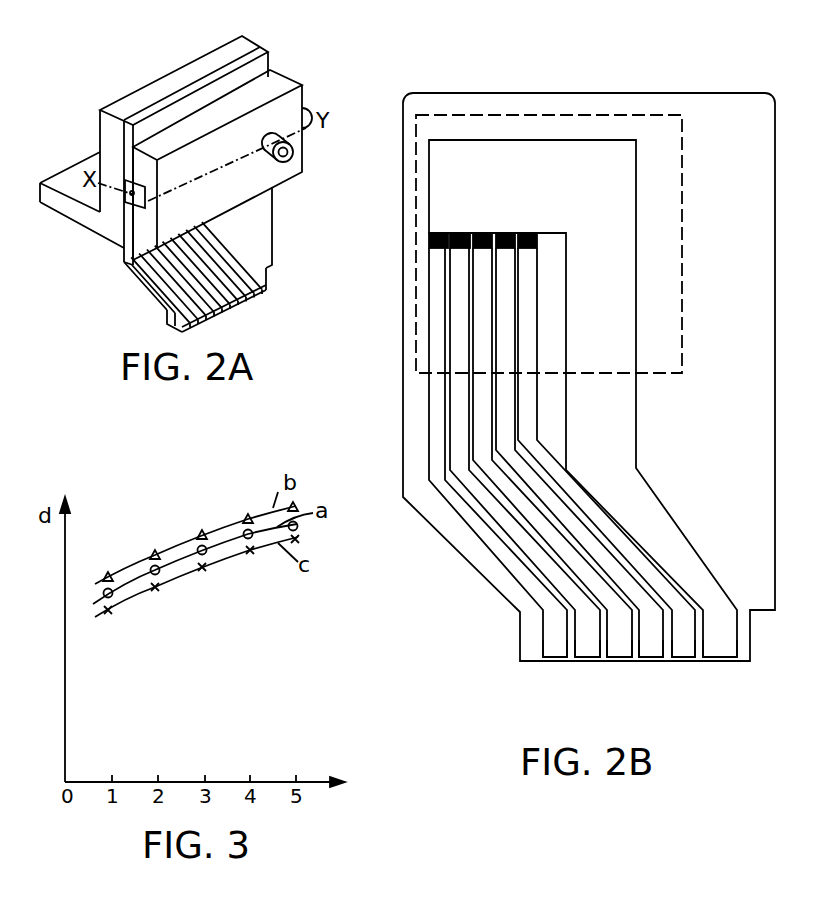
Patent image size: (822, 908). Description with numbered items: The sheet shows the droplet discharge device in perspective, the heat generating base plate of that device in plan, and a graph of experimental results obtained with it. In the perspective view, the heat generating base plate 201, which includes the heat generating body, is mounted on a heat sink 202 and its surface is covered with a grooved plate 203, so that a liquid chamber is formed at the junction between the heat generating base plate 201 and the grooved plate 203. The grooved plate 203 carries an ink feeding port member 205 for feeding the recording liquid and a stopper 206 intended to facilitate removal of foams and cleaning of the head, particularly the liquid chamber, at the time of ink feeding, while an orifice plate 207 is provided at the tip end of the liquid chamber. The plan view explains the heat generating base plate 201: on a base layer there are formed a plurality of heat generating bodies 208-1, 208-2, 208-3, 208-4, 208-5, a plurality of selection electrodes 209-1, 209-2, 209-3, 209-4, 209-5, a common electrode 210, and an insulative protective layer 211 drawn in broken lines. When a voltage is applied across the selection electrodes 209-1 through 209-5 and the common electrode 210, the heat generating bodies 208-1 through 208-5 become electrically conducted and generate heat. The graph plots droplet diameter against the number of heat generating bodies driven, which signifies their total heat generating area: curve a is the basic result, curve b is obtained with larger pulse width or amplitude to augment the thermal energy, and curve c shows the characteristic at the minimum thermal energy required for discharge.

In FIG. 2A, the heat generating base plate 201 is at (262, 48).
In FIG. 2B, the heat generating base plate 201 is at (736, 106).
In FIG. 2A, the heat sink 202 is at (200, 62).
In FIG. 2A, the grooved plate 203 is at (283, 78).
In FIG. 2A, the ink feeding port member 205 is at (292, 153).
In FIG. 2A, the stopper 206 is at (310, 110).
In FIG. 2A, the orifice plate 207 is at (147, 184).
In FIG. 2B, the heat generating body 208-1 is at (433, 231).
In FIG. 2B, the heat generating body 208-2 is at (459, 233).
In FIG. 2B, the heat generating body 208-3 is at (488, 232).
In FIG. 2B, the heat generating body 208-4 is at (514, 226).
In FIG. 2B, the heat generating body 208-5 is at (533, 232).
In FIG. 2B, the selection electrode 209-1 is at (555, 654).
In FIG. 2B, the selection electrode 209-2 is at (582, 653).
In FIG. 2B, the selection electrode 209-3 is at (617, 653).
In FIG. 2B, the selection electrode 209-4 is at (653, 652).
In FIG. 2B, the selection electrode 209-5 is at (683, 652).
In FIG. 2B, the common electrode 210 is at (723, 652).
In FIG. 2B, the insulative protective layer 211 is at (682, 307).